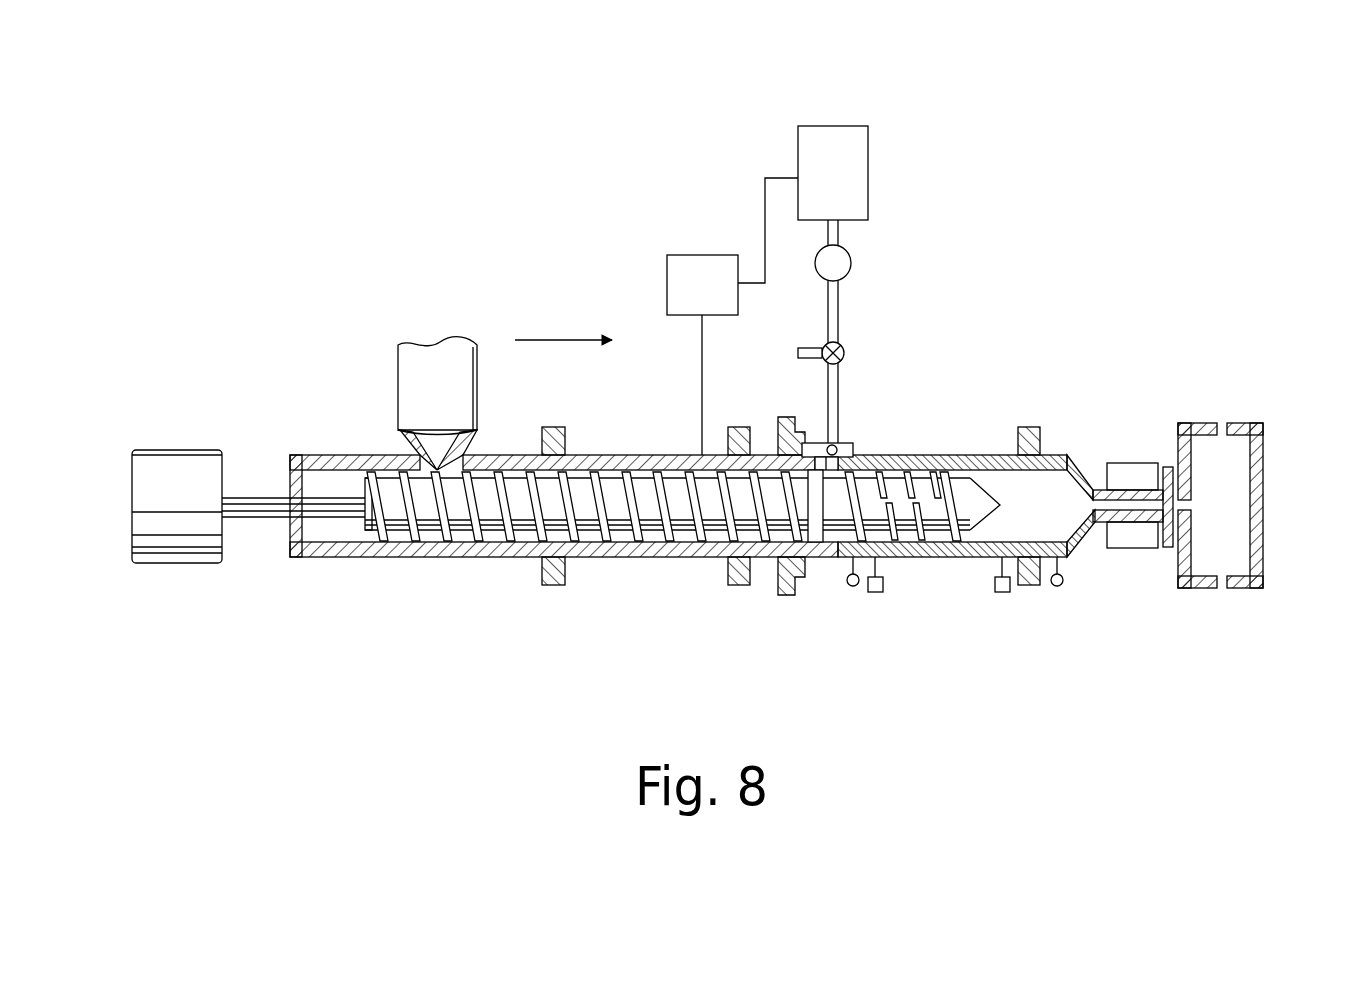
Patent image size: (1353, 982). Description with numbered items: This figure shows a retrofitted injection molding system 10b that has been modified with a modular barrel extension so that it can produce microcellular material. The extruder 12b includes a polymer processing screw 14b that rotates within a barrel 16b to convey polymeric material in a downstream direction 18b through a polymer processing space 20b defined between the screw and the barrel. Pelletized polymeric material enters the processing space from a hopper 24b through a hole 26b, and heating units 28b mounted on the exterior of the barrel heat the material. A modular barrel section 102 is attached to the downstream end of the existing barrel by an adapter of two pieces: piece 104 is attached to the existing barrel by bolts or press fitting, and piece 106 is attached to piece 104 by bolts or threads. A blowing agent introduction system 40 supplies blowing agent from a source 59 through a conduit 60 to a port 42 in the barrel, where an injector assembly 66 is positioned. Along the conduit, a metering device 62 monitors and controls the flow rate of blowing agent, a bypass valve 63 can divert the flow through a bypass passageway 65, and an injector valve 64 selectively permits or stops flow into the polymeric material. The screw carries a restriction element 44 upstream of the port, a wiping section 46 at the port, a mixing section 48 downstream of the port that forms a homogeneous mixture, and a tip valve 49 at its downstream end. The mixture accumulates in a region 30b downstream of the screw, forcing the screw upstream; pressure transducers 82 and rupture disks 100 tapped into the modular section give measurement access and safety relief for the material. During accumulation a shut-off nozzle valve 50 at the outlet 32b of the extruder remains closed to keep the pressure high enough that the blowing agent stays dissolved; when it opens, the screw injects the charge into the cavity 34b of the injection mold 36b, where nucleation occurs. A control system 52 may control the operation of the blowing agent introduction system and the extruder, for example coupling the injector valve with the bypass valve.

The retrofitted injection molding system 10b is at (567, 226).
The extruder 12b is at (329, 572).
The polymer processing screw 14b is at (653, 483).
The barrel 16b is at (443, 557).
The downstream direction 18b is at (563, 323).
The polymer processing space 20b is at (588, 471).
The hopper 24b is at (440, 355).
The feed opening 26b is at (437, 450).
The heating units 28b is at (555, 585).
The region downstream of the screw 30b is at (1078, 487).
The nozzle heaters 32b is at (1105, 523).
The mold cavity 34b is at (1245, 484).
The mold 36b is at (1265, 457).
The blowing agent introduction system 40 is at (880, 262).
The blowing agent port 42 is at (880, 456).
The restriction element 44 is at (830, 560).
The wiping section 46 is at (843, 560).
The mixing section 48 is at (937, 555).
The tip valve 49 is at (972, 558).
The shut-off nozzle valve 50 is at (1168, 548).
The control system 52 is at (687, 298).
The source of blowing agent 59 is at (818, 189).
The conduit 60 is at (838, 320).
The metering device 62 is at (818, 276).
The bypass valve 63 is at (845, 356).
The injector valve 64 is at (840, 445).
The bypass passageway 65 is at (798, 355).
The injector assembly 66 is at (860, 452).
The pressure transducers 82 is at (855, 590).
The rupture disks 100 is at (1002, 594).
The modular barrel section 102 is at (982, 455).
The adapter piece 104 is at (784, 594).
The adapter piece 106 is at (790, 575).